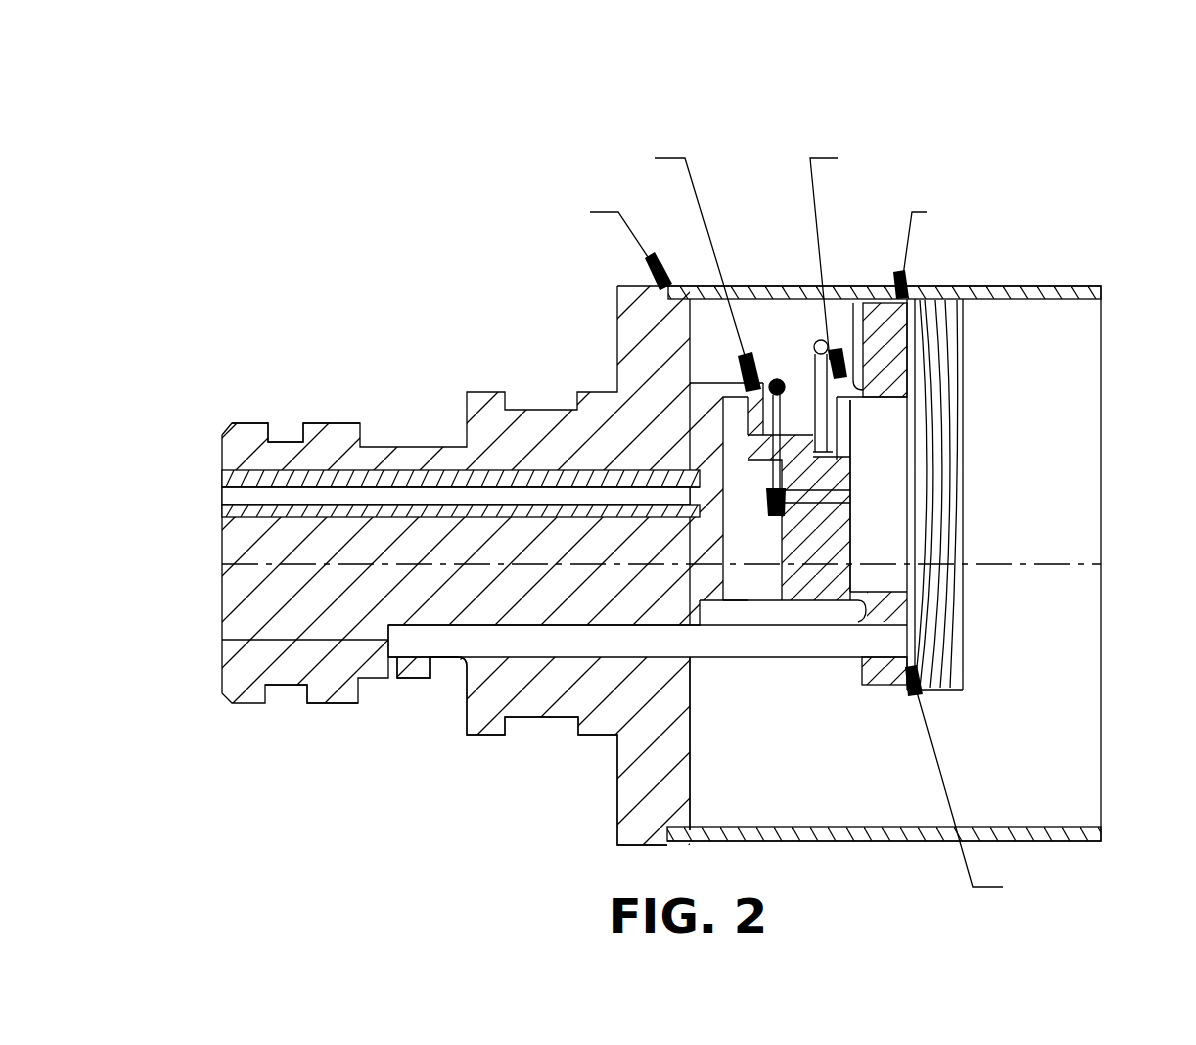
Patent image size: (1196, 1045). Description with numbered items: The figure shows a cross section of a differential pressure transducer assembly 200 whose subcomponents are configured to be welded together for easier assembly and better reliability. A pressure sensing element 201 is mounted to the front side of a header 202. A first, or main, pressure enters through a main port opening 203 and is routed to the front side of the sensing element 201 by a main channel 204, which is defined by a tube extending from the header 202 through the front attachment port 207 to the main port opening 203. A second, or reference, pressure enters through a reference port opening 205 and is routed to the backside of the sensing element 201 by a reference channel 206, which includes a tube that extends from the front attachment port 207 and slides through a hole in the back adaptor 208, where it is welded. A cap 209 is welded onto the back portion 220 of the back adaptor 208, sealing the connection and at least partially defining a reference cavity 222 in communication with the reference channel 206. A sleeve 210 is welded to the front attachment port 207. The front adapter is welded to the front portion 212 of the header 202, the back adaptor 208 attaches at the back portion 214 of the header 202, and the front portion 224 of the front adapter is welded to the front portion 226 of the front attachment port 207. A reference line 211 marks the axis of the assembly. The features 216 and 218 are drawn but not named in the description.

The differential pressure transducer assembly 200 is at (701, 70).
The pressure sensing element 201 is at (772, 500).
The header 202 is at (814, 523).
The main port opening 203 is at (210, 488).
The main channel 204 is at (637, 493).
The reference port opening 205 is at (411, 698).
The reference channel 206 is at (597, 645).
The front attachment port 207 is at (263, 587).
The back adaptor 208 is at (885, 377).
The cap 209 is at (950, 488).
The sleeve 210 is at (1042, 297).
The reference line 211 is at (1030, 563).
The front portion of the header 212 is at (748, 583).
The back portion of the header 214 is at (860, 567).
The gap 216 is at (887, 652).
The slot 218 is at (635, 656).
The back portion of the back adapter 220 is at (920, 318).
The reference cavity 222 is at (877, 515).
The front portion of the front adapter 224 is at (208, 519).
The front portion of the front attachment port 226 is at (367, 703).